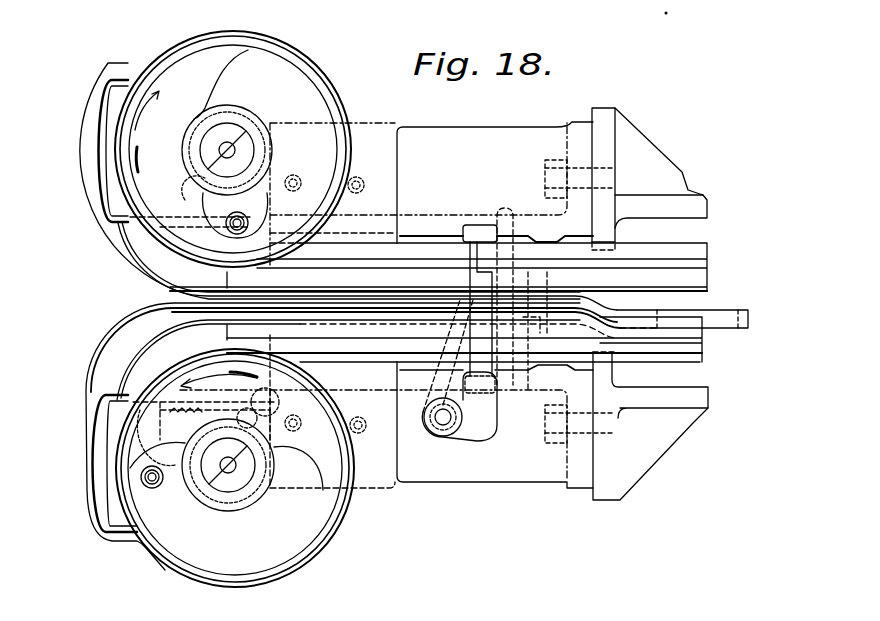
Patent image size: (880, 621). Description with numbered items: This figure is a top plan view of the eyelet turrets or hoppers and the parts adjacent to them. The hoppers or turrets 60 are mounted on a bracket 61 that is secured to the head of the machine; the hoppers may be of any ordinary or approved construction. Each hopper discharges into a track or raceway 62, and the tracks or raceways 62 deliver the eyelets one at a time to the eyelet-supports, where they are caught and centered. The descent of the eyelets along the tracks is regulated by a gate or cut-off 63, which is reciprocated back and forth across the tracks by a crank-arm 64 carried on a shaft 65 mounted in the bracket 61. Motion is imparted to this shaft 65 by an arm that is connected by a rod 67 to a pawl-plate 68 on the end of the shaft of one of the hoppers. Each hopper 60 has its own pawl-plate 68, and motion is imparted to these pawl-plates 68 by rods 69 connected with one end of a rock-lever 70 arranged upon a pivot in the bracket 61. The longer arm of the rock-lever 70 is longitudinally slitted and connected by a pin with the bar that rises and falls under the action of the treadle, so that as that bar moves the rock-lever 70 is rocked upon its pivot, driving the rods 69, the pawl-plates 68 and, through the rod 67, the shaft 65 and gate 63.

The hopper or turret 60 is at (247, 607).
The bracket 61 is at (530, 458).
The track or raceway 62 is at (703, 264).
The gate or cut-off 63 is at (495, 407).
The crank-arm 64 is at (460, 440).
The shaft 65 is at (438, 420).
The rod 67 is at (78, 347).
The pawl-plate 68 is at (273, 407).
The rod 69 is at (118, 262).
The rock-lever 70 is at (717, 309).